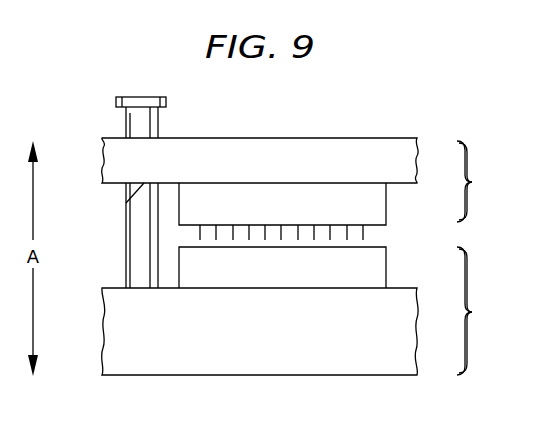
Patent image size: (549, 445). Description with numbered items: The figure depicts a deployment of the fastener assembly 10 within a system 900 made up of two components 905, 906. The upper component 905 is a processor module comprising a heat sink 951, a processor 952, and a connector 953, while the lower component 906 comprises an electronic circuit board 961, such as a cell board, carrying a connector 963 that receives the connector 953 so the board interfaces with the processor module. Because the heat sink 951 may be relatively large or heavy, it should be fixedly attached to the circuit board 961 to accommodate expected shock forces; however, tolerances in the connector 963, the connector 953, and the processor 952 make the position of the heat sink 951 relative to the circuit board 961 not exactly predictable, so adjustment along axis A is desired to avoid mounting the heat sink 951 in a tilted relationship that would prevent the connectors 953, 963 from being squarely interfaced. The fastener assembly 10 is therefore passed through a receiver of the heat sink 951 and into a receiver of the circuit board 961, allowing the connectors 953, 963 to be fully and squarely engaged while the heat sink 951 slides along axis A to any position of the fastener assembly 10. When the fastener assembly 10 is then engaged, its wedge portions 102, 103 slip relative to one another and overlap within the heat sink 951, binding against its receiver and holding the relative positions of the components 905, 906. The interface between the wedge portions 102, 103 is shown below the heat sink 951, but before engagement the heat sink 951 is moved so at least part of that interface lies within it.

The fastener assembly 10 is at (118, 80).
The wedge portion 102 is at (125, 127).
The wedge portion 103 is at (125, 262).
The system 900 is at (401, 89).
The heat sink 951 is at (232, 145).
The processor 952 is at (295, 190).
The connector 953 is at (364, 232).
The electronic circuit board 961 is at (277, 343).
The connector 963 is at (348, 282).
The component 905 is at (485, 181).
The component 906 is at (485, 311).